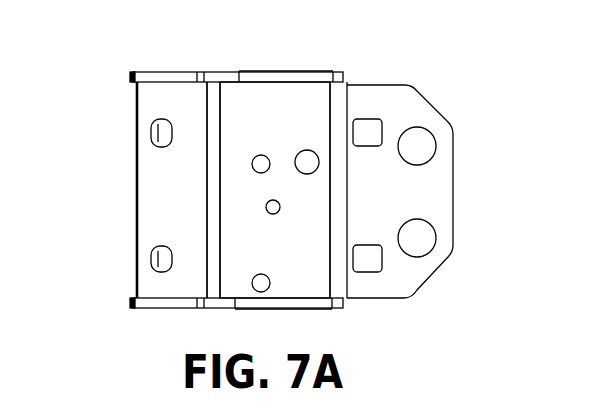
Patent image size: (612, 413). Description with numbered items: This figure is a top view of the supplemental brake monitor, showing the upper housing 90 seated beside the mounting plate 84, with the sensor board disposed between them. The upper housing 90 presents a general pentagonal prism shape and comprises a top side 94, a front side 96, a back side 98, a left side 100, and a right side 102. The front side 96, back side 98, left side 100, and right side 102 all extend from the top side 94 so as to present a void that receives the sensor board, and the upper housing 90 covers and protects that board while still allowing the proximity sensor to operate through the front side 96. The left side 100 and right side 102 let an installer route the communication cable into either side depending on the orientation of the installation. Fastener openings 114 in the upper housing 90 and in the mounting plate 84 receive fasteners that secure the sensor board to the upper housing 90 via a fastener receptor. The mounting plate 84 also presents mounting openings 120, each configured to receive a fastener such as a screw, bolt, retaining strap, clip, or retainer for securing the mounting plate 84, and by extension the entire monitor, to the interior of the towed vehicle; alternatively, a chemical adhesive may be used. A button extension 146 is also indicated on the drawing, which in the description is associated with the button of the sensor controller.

The upper housing 90 is at (290, 179).
The top side 94 is at (278, 98).
The front side 96 is at (335, 103).
The back side 98 is at (143, 108).
The left side 100 is at (247, 72).
The right side 102 is at (157, 312).
The mounting plate 84 is at (420, 92).
The fastener opening 114 is at (257, 275).
The mounting opening 120 is at (150, 258).
The button extension 146 is at (307, 150).